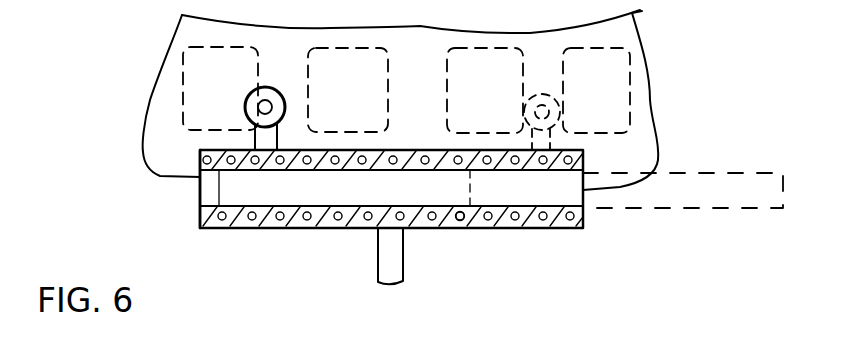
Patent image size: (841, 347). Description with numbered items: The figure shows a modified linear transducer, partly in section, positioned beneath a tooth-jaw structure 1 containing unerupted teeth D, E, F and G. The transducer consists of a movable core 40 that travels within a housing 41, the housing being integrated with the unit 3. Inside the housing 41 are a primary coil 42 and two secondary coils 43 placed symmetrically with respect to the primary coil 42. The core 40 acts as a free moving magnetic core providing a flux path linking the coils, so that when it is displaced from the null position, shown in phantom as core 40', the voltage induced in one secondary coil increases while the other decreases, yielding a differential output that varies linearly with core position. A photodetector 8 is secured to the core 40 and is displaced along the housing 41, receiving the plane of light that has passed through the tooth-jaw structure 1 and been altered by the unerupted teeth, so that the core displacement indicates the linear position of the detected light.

The tooth-jaw structure 1 is at (638, 72).
The photodetector 8 is at (267, 88).
The movable core 40 is at (389, 205).
The movable core 40' is at (683, 213).
The housing 41 is at (200, 213).
The primary coil 42 is at (461, 221).
The secondary coils 43 is at (280, 221).
The unit 3 is at (382, 262).